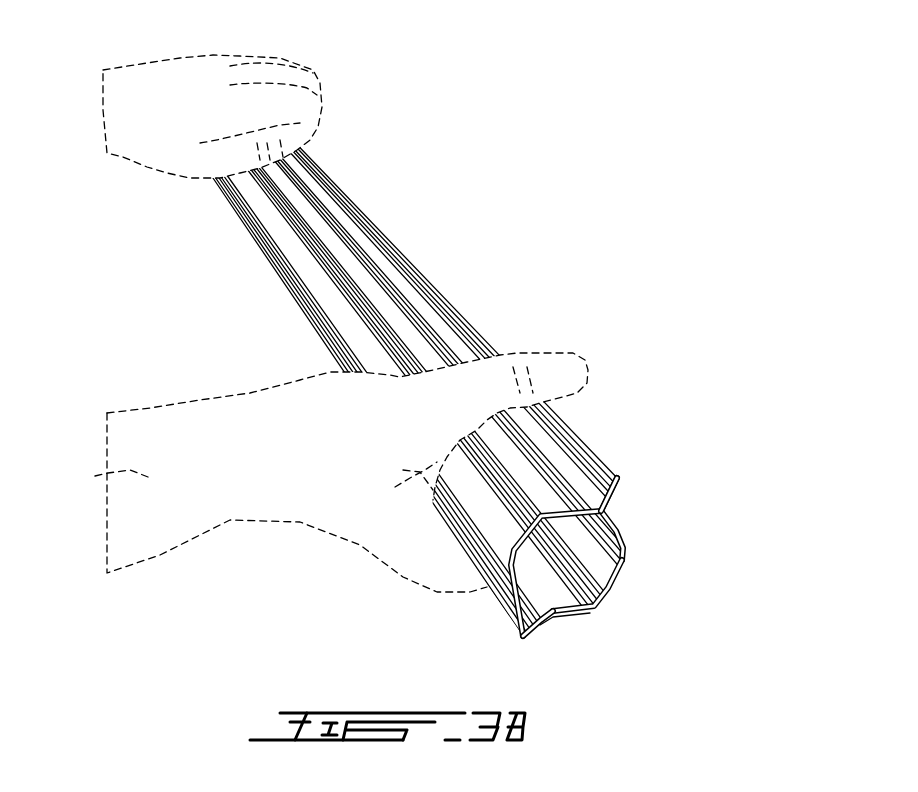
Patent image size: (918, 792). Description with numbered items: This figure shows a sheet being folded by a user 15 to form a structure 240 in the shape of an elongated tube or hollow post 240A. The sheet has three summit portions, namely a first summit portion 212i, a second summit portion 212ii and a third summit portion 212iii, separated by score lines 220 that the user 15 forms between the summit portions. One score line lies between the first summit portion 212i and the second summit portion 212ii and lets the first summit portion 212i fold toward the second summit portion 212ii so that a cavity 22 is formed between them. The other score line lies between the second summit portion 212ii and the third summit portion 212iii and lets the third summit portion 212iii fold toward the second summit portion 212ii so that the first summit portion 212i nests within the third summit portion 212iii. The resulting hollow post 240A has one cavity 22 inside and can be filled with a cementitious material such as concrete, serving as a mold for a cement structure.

The user 15 is at (95, 476).
The cavity 22 is at (608, 560).
The first summit portion 212i is at (624, 549).
The second summit portion 212ii is at (477, 490).
The third summit portion 212iii is at (619, 584).
The score lines 220 is at (622, 476).
The structure 240 is at (465, 415).
The elongated tube or post 240A is at (465, 451).